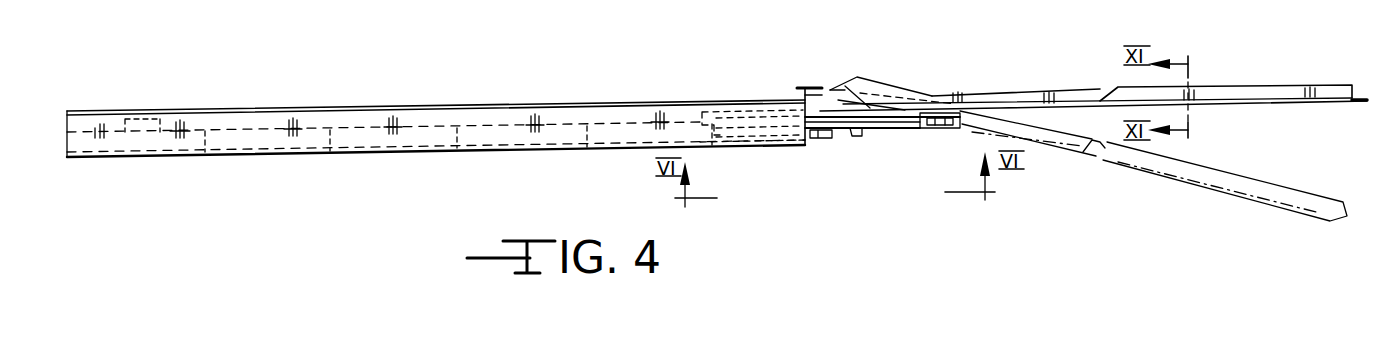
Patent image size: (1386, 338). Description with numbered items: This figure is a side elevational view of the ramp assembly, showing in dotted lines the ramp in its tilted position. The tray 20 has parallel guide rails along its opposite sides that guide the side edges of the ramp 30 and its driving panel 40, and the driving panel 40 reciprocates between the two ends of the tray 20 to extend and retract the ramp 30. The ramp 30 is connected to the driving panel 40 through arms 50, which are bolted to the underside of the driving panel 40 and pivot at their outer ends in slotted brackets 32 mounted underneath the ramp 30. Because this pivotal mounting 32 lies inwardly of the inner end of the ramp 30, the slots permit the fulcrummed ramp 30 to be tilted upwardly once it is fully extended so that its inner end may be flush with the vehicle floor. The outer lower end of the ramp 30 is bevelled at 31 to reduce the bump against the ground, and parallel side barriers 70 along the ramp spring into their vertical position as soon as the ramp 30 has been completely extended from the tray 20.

The tray 20 is at (491, 166).
The ramp 30 is at (1237, 112).
The bevelled end 31 is at (1357, 104).
The slotted brackets 32 is at (950, 128).
The driving panel 40 is at (745, 110).
The arms 50 is at (862, 133).
The side barriers 70 is at (987, 97).